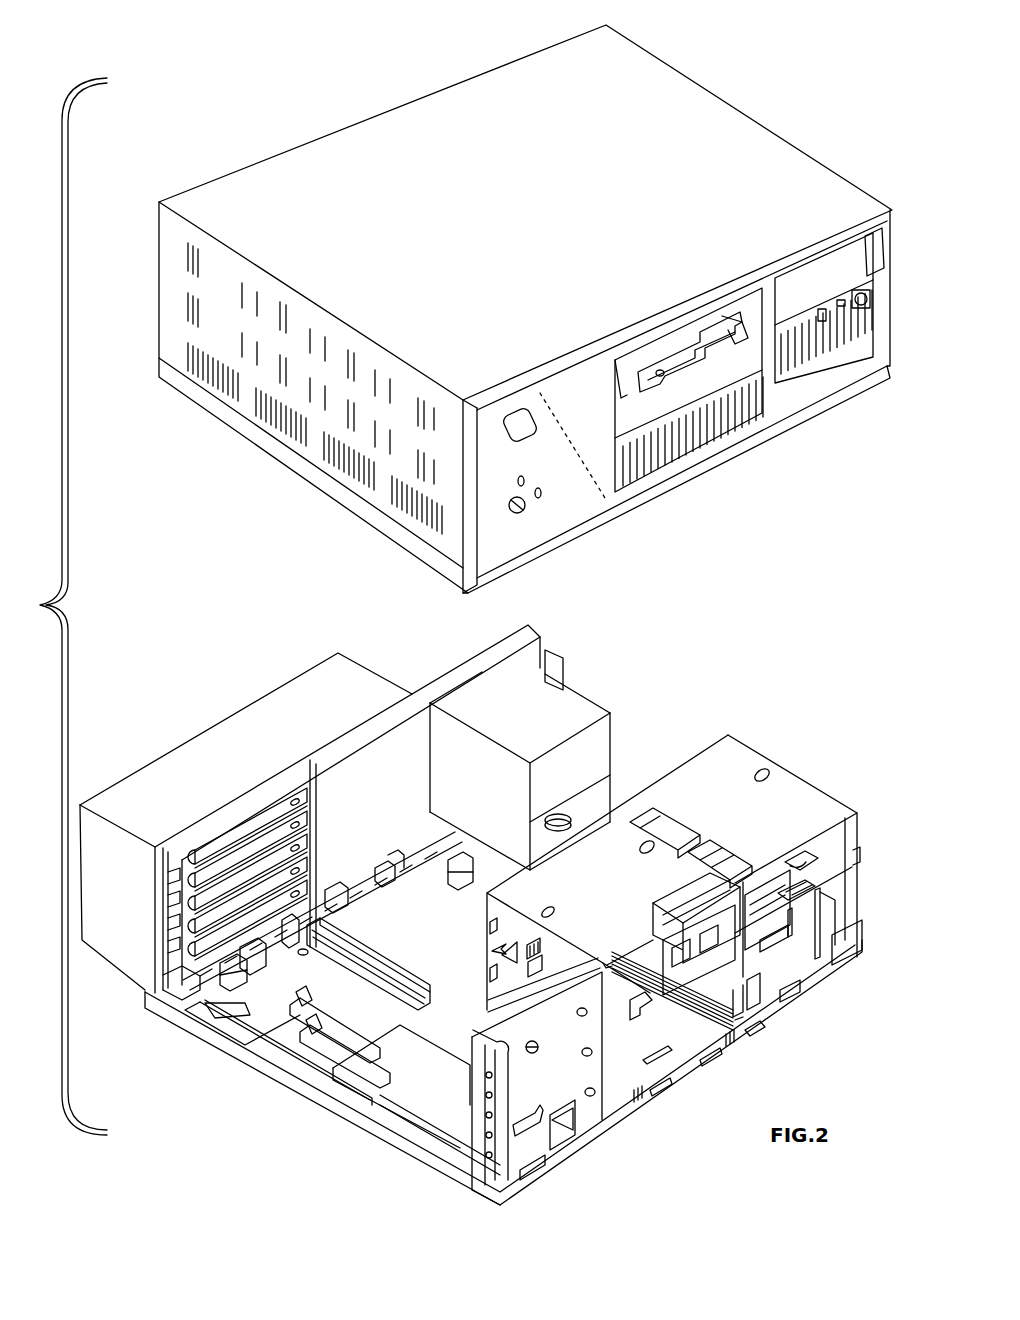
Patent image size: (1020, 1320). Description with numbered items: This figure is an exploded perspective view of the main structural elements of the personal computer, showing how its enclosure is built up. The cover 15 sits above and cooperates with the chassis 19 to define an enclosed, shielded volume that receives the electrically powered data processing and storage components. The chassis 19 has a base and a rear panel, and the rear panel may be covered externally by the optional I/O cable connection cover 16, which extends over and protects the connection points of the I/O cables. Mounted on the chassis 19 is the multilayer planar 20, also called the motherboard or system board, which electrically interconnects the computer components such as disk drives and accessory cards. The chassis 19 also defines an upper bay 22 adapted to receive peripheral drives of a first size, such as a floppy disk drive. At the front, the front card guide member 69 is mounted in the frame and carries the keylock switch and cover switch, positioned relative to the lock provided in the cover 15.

The cover 15 is at (335, 142).
The I/O cable connection cover 16 is at (205, 735).
The chassis 19 is at (292, 1078).
The multilayer planar 20 is at (265, 1016).
The upper bay 22 is at (735, 928).
The front card guide member 69 is at (470, 1110).